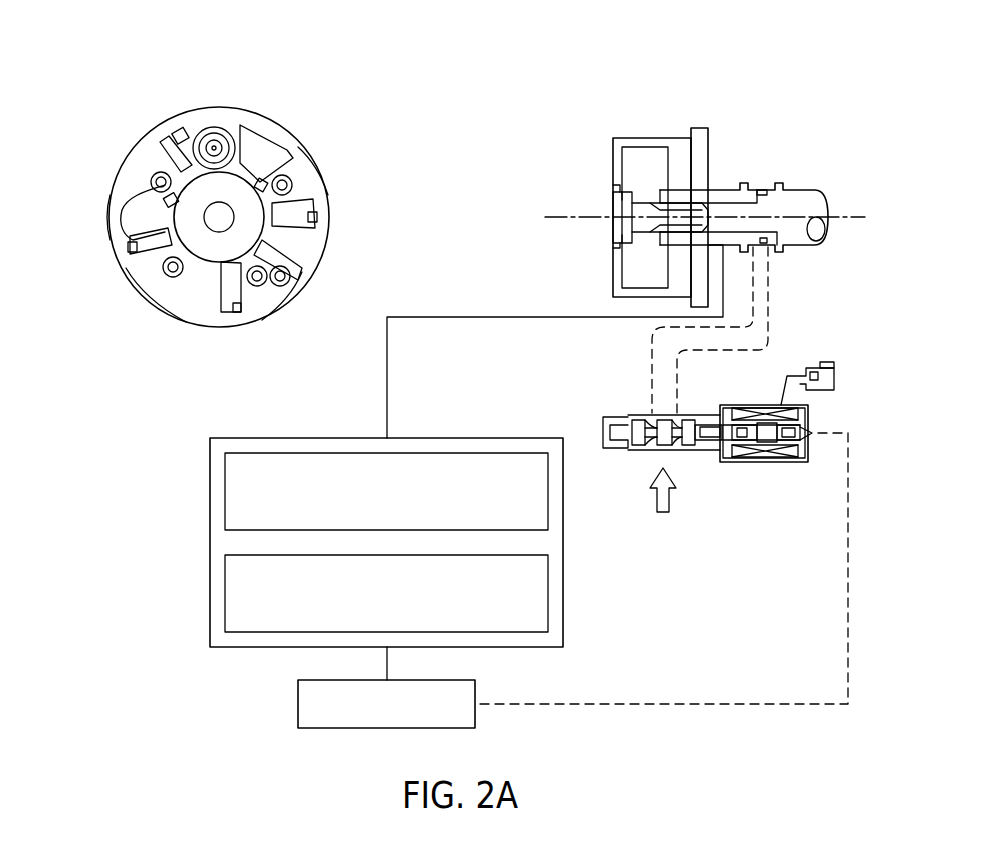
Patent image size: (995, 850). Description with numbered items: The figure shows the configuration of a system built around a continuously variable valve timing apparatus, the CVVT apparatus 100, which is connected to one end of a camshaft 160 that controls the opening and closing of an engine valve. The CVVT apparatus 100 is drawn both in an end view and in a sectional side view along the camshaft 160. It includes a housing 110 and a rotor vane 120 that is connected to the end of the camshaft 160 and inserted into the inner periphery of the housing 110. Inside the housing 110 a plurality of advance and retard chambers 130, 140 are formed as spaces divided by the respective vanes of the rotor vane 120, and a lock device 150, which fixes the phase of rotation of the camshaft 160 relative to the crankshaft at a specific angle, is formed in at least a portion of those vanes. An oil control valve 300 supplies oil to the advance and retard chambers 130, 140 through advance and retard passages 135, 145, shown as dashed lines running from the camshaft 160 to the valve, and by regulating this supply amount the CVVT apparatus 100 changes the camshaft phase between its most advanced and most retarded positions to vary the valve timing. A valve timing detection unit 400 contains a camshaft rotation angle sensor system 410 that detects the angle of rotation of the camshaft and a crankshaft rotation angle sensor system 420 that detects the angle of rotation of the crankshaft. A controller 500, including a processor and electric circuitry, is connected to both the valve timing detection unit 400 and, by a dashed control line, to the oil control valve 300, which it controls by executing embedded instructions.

The CVVT apparatus 100 is at (183, 113).
The housing 110 is at (158, 278).
The rotor vane 120 is at (240, 273).
The advance chamber 130 is at (133, 205).
The retard chamber 140 is at (138, 283).
The lock device 150 is at (214, 148).
The camshaft 160 is at (725, 188).
The advance passage 135 is at (652, 390).
The retard passage 145 is at (769, 298).
The oil control valve 300 is at (708, 452).
The valve timing detection unit 400 is at (435, 438).
The camshaft rotation angle sensor system 410 is at (225, 497).
The crankshaft rotation angle sensor system 420 is at (225, 597).
The controller 500 is at (298, 704).